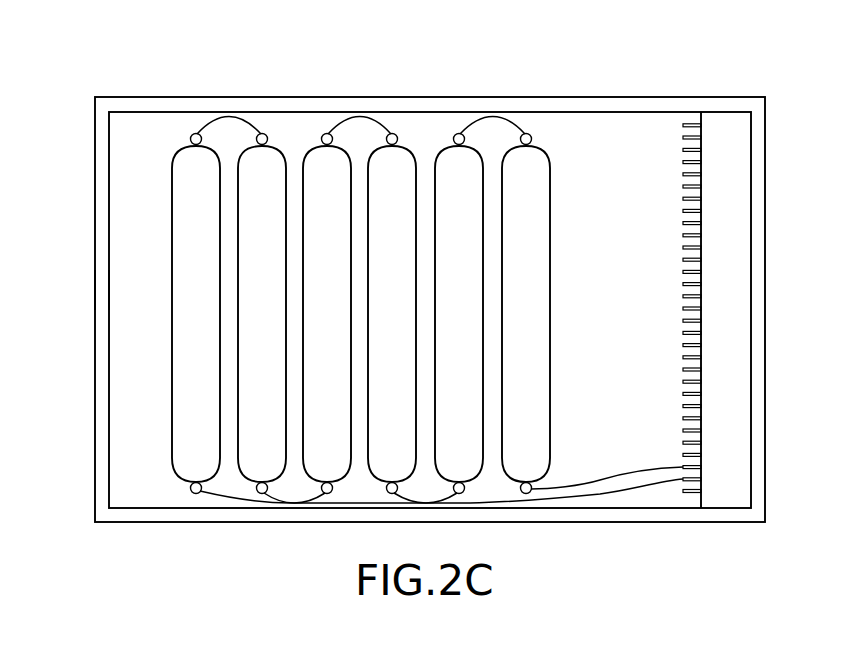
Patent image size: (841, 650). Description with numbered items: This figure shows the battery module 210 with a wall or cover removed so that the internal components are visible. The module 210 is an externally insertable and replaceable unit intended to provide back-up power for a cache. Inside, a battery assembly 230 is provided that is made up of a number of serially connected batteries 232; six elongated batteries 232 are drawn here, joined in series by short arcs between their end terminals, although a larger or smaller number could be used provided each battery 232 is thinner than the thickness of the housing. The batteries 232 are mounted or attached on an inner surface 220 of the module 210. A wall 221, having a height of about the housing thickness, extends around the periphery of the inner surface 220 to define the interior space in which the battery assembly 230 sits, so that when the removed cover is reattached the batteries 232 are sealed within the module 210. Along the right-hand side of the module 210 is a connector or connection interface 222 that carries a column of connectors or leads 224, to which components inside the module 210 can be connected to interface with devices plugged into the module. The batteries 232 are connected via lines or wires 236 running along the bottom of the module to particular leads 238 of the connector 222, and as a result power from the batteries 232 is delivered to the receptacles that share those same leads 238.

The battery module 210 is at (84, 88).
The inner surface 220 is at (132, 216).
The wall 221 is at (114, 280).
The connector 222 is at (735, 112).
The leads 224 is at (683, 126).
The battery assembly 230 is at (400, 266).
The battery 232 is at (483, 427).
The wires 236 is at (597, 497).
The leads 238 is at (684, 477).